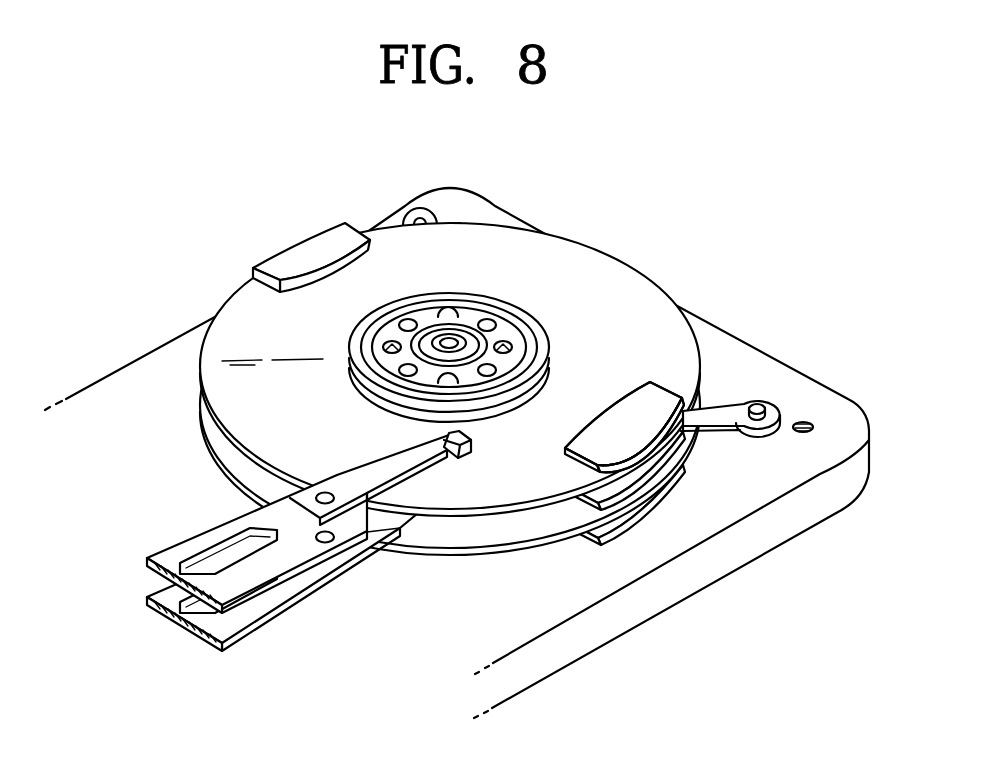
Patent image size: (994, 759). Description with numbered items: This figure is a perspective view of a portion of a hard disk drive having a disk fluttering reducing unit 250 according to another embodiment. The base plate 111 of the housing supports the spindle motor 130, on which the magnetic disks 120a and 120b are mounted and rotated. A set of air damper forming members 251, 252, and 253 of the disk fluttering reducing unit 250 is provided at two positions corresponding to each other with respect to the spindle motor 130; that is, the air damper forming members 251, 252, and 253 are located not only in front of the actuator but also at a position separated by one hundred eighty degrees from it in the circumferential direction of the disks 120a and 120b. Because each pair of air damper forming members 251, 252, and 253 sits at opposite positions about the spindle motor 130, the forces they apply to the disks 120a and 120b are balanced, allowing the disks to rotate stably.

The base plate 111 is at (820, 497).
The magnetic disk 120a is at (483, 533).
The magnetic disk 120b is at (433, 497).
The spindle motor 130 is at (506, 332).
The disk fluttering reducing unit 250 is at (776, 620).
The air damper forming member 251 is at (622, 516).
The air damper forming member 252 is at (293, 251).
The air damper forming member 253 is at (400, 225).